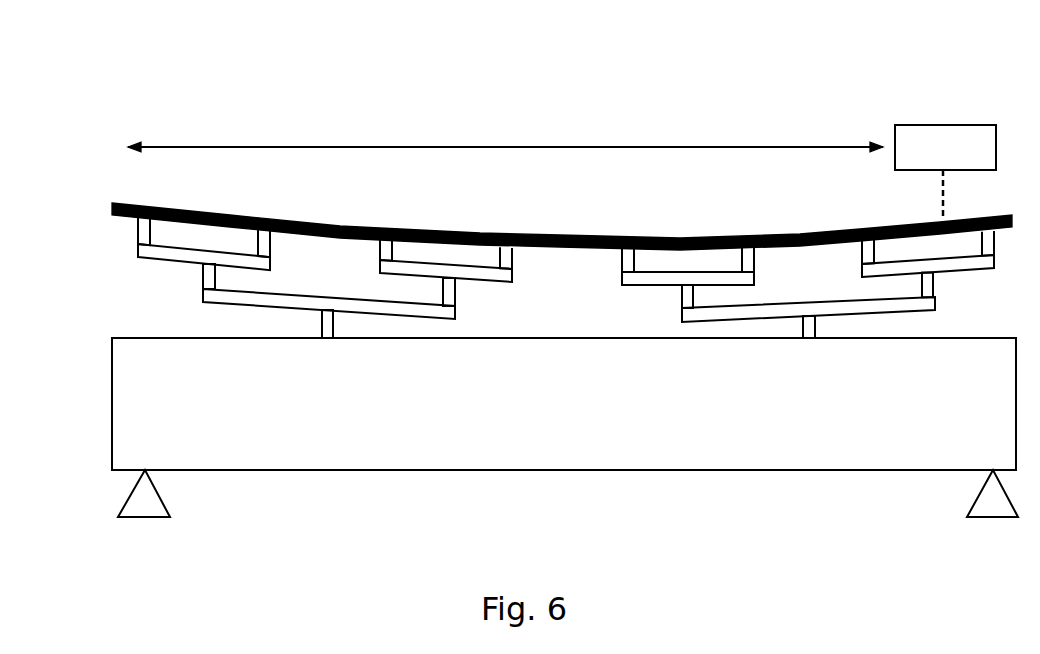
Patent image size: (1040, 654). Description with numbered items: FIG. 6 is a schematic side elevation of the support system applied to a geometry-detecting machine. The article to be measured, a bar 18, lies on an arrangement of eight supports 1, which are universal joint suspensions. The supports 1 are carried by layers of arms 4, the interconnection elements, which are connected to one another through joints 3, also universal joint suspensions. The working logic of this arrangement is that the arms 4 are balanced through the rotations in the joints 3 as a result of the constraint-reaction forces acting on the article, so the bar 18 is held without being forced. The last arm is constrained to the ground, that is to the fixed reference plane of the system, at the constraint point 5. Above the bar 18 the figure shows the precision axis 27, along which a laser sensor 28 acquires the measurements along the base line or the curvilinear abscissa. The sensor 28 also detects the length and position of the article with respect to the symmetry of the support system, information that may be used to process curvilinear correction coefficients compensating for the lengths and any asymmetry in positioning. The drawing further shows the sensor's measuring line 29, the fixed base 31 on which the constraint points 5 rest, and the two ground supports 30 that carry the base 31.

The bar 18 is at (120, 198).
The supports 1 is at (135, 225).
The joints 3 is at (192, 270).
The arms 4 is at (258, 313).
The constraint point 5 is at (313, 327).
The precision axis 27 is at (492, 138).
The sensor 28 is at (948, 122).
The measuring beam 29 is at (930, 182).
The bearing support 30 is at (117, 500).
The base plate 31 is at (542, 398).